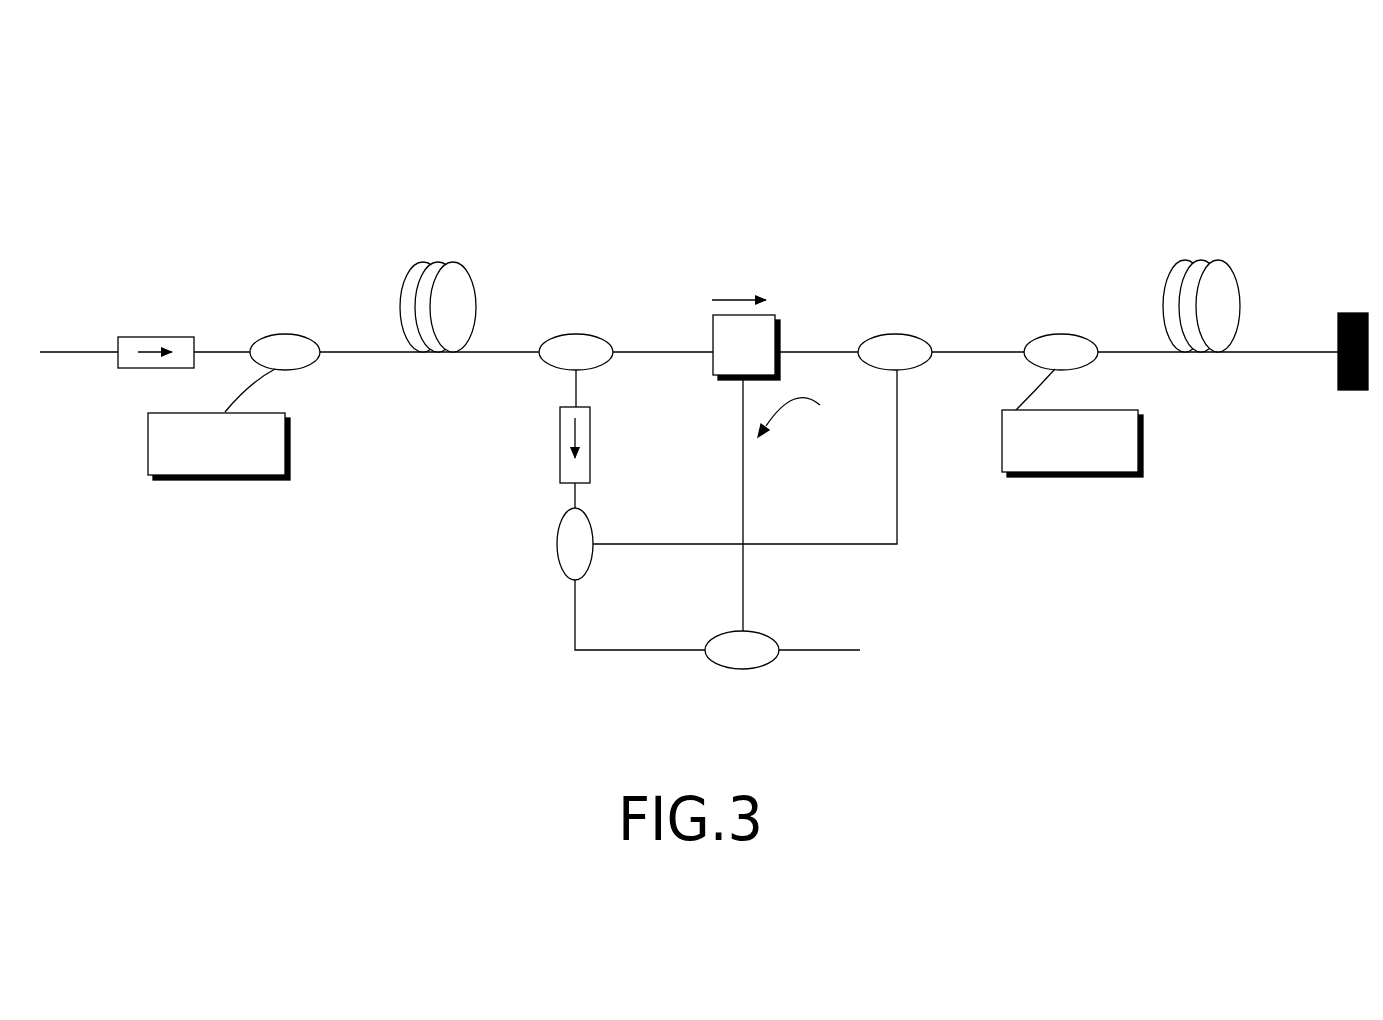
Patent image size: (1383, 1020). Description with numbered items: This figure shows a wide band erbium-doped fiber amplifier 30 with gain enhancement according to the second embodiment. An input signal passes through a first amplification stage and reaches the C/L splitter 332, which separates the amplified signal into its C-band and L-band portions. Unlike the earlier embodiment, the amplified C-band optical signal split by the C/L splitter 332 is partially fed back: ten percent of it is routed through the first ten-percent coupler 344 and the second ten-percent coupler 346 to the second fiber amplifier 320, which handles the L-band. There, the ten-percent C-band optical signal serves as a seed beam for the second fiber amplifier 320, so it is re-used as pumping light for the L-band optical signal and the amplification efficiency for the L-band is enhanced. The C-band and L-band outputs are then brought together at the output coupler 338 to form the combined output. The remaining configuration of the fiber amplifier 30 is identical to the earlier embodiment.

The fiber amplifier 30 is at (776, 162).
The second fiber amplifier 320 is at (1128, 258).
The C/L splitter 332 is at (605, 366).
The first 10% coupler 344 is at (592, 525).
The second 10% coupler 346 is at (922, 366).
The output coupler 338 is at (780, 643).